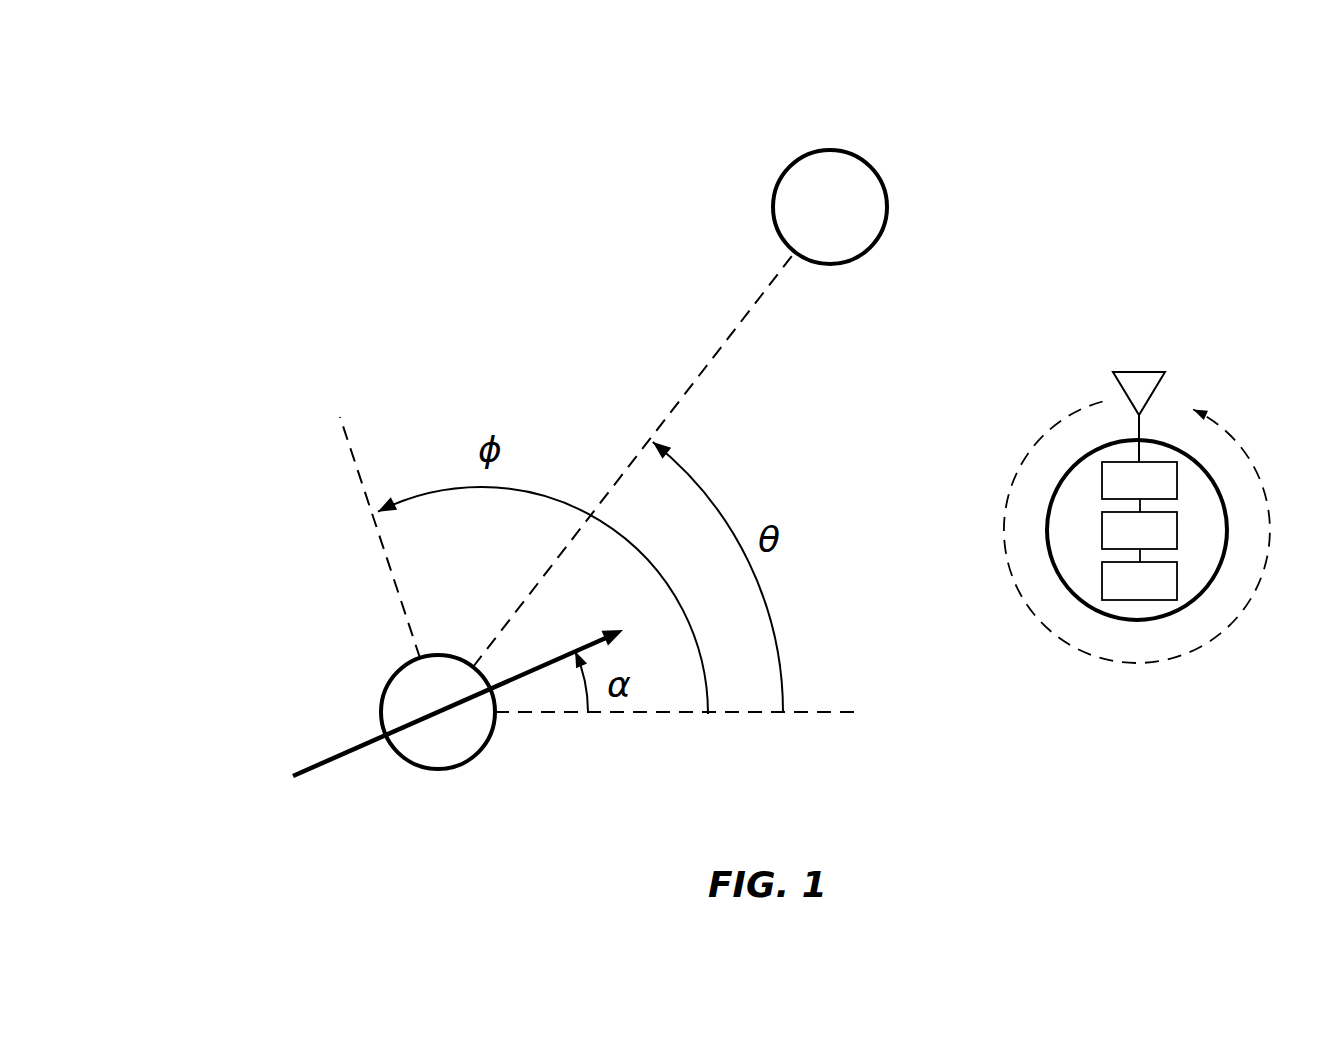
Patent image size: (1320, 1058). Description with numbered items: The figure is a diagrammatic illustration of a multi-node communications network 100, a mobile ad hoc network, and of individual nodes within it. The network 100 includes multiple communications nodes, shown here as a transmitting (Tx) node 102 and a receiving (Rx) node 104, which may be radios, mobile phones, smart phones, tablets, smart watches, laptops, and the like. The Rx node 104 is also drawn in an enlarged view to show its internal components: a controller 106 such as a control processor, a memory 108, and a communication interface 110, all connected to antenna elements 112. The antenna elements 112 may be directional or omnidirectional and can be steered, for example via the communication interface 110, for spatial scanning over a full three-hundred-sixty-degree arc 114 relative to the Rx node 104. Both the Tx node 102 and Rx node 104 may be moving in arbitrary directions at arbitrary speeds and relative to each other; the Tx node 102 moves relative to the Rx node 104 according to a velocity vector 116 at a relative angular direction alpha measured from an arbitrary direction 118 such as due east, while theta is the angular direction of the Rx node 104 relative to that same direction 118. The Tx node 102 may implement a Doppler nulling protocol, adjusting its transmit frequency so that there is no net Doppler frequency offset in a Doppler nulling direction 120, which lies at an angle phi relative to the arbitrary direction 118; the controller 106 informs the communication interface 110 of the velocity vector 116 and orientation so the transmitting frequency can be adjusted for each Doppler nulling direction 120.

The multi-node communications network 100 is at (205, 114).
The transmitting (Tx) node 102 is at (381, 710).
The receiving (Rx) node 104 is at (775, 205).
The controller 106 is at (1126, 542).
The memory 108 is at (1126, 593).
The communication interface 110 is at (1126, 492).
The antenna elements 112 is at (1134, 380).
The 360-degree arc 114 is at (1212, 650).
The velocity vector 116 is at (530, 675).
The arbitrary direction 118 is at (918, 663).
The Doppler nulling direction 120 is at (350, 452).